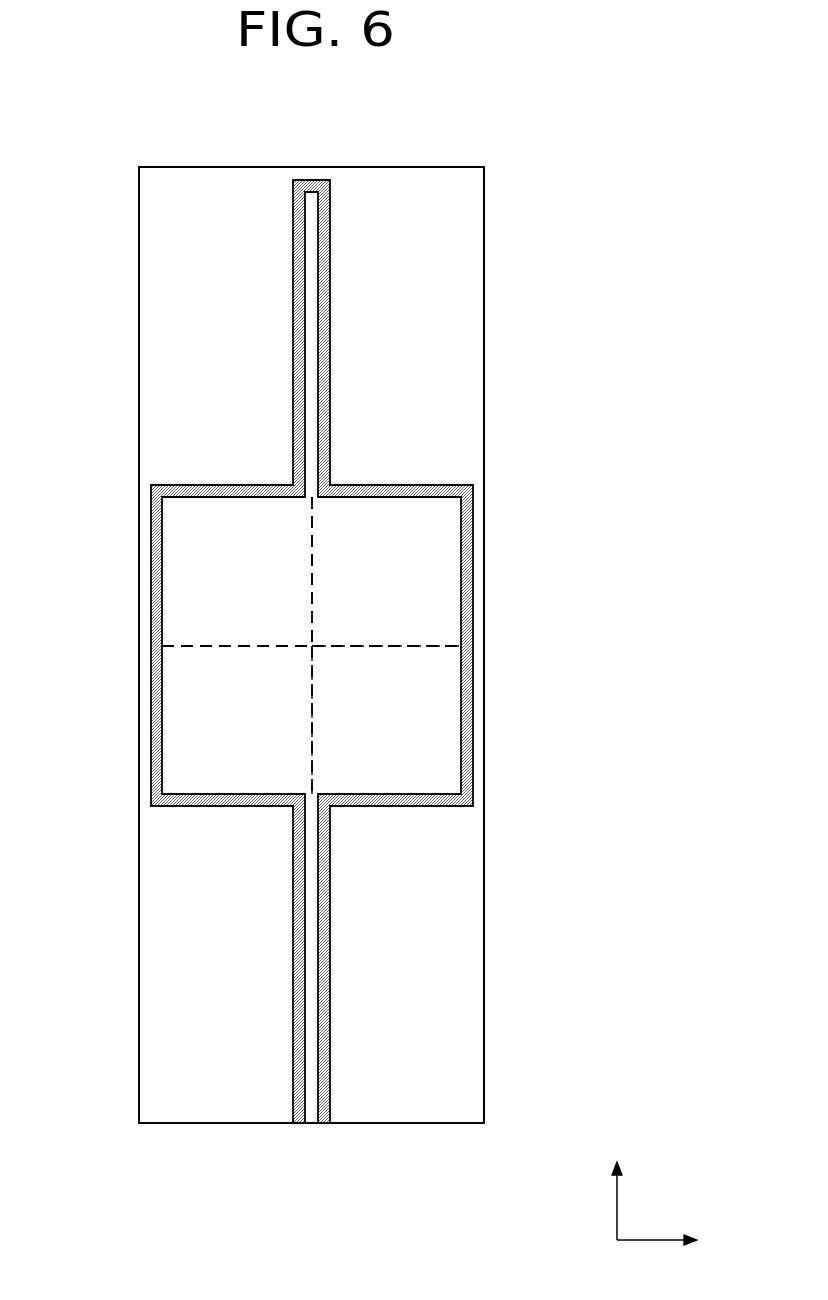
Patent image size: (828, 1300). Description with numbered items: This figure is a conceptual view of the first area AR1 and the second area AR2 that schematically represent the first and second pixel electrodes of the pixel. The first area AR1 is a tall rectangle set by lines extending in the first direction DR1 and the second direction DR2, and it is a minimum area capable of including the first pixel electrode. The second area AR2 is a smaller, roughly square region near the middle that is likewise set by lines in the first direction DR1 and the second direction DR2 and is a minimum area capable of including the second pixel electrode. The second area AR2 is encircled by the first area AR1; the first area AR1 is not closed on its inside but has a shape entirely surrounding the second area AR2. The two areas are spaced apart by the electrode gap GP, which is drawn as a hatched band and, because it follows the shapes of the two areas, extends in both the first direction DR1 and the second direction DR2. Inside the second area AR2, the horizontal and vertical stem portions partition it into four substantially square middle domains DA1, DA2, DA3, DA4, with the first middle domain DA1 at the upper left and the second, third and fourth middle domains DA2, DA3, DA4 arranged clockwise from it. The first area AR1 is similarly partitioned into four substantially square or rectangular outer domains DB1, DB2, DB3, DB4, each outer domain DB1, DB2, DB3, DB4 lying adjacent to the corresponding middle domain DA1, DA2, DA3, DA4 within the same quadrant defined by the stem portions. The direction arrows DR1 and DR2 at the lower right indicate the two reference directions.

The first area AR1 is at (139, 370).
The second area AR2 is at (156, 609).
The electrode gap GP is at (156, 532).
The first middle domain DA1 is at (237, 571).
The second middle domain DA2 is at (386, 571).
The third middle domain DA3 is at (386, 720).
The fourth middle domain DA4 is at (237, 720).
The first outer domain DB1 is at (216, 326).
The second outer domain DB2 is at (407, 326).
The third outer domain DB3 is at (407, 964).
The fourth outer domain DB4 is at (216, 964).
The first direction DR1 is at (677, 1240).
The second direction DR2 is at (617, 1187).